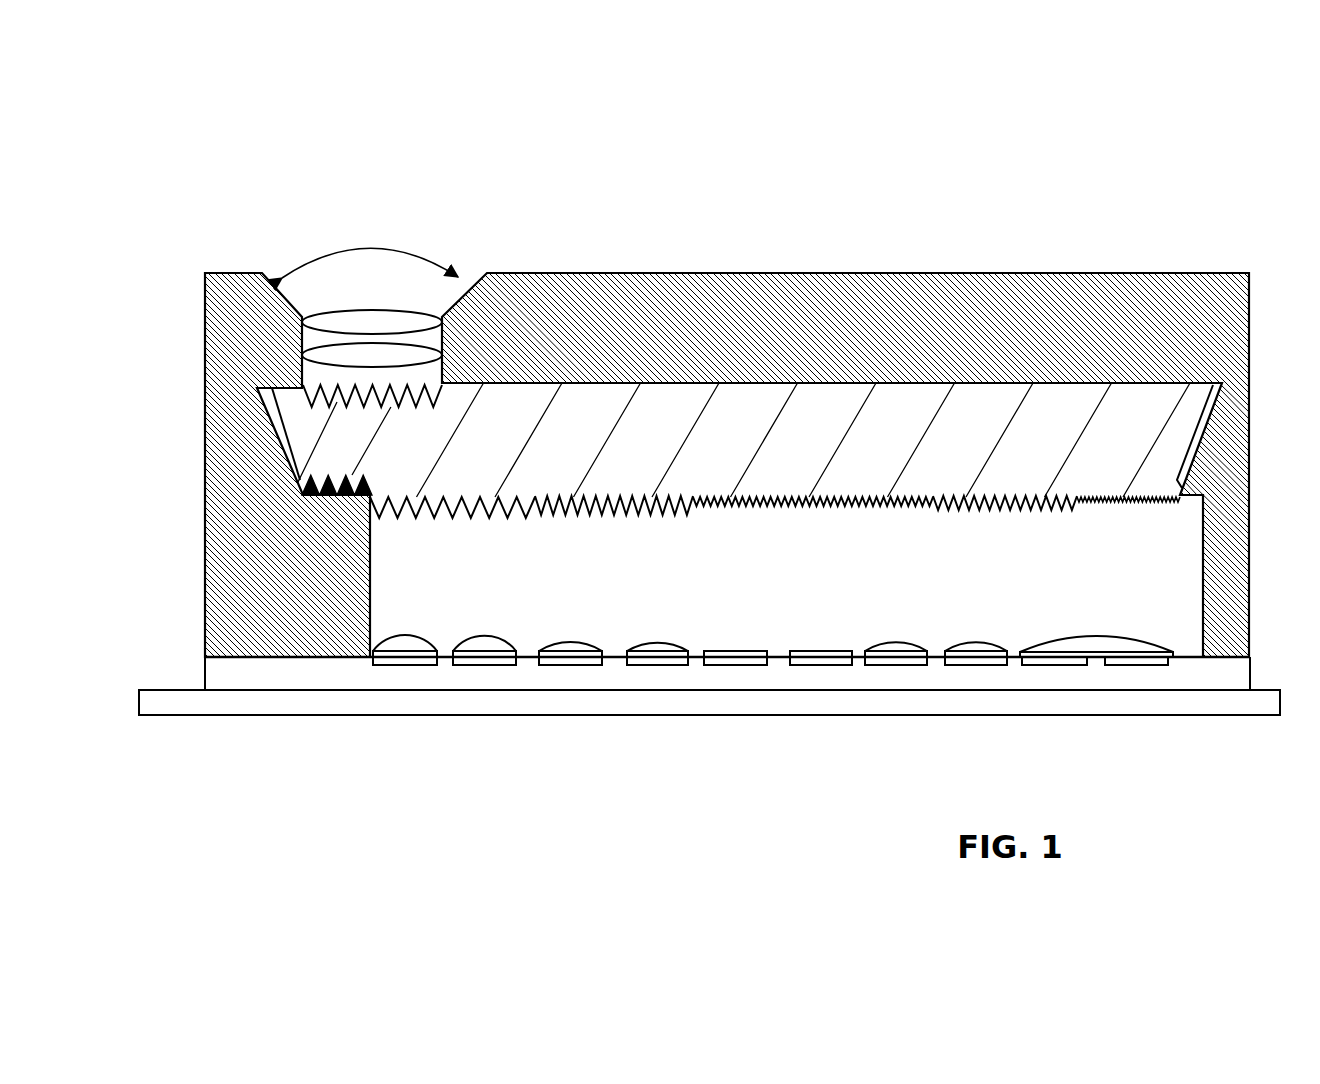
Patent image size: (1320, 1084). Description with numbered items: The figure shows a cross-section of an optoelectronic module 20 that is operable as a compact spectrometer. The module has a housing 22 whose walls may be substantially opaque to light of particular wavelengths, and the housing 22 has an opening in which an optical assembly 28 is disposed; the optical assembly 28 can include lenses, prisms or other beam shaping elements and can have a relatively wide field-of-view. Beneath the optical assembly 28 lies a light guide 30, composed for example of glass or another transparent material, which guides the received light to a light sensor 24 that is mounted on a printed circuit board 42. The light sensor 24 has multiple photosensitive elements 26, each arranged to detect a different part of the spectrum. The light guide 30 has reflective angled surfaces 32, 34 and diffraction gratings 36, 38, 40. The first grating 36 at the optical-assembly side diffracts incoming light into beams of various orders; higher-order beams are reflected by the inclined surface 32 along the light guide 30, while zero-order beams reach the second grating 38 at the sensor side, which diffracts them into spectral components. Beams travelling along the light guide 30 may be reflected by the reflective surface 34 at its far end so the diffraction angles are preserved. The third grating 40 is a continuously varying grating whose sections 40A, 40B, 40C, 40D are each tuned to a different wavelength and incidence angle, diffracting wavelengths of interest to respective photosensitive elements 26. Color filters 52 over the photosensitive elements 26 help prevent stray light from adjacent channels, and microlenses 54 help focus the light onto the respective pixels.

The optoelectronic module 20 is at (1015, 252).
The housing 22 is at (798, 273).
The light sensor 24 is at (313, 675).
The photosensitive elements 26 is at (767, 714).
The optical assembly 28 is at (412, 303).
The light guide 30 is at (1068, 413).
The reflective angled surface 32 is at (287, 452).
The reflective surface 34 is at (1192, 455).
The first diffraction grating 36 is at (360, 407).
The second diffraction grating 38 is at (345, 498).
The third diffraction grating 40 is at (778, 559).
The first section of the third grating 40A is at (525, 535).
The second section of the third grating 40B is at (715, 535).
The third section of the third grating 40C is at (723, 535).
The fourth section of the third grating 40D is at (1090, 535).
The printed circuit board 42 is at (183, 706).
The color filters 52 is at (500, 665).
The microlenses 54 is at (485, 638).